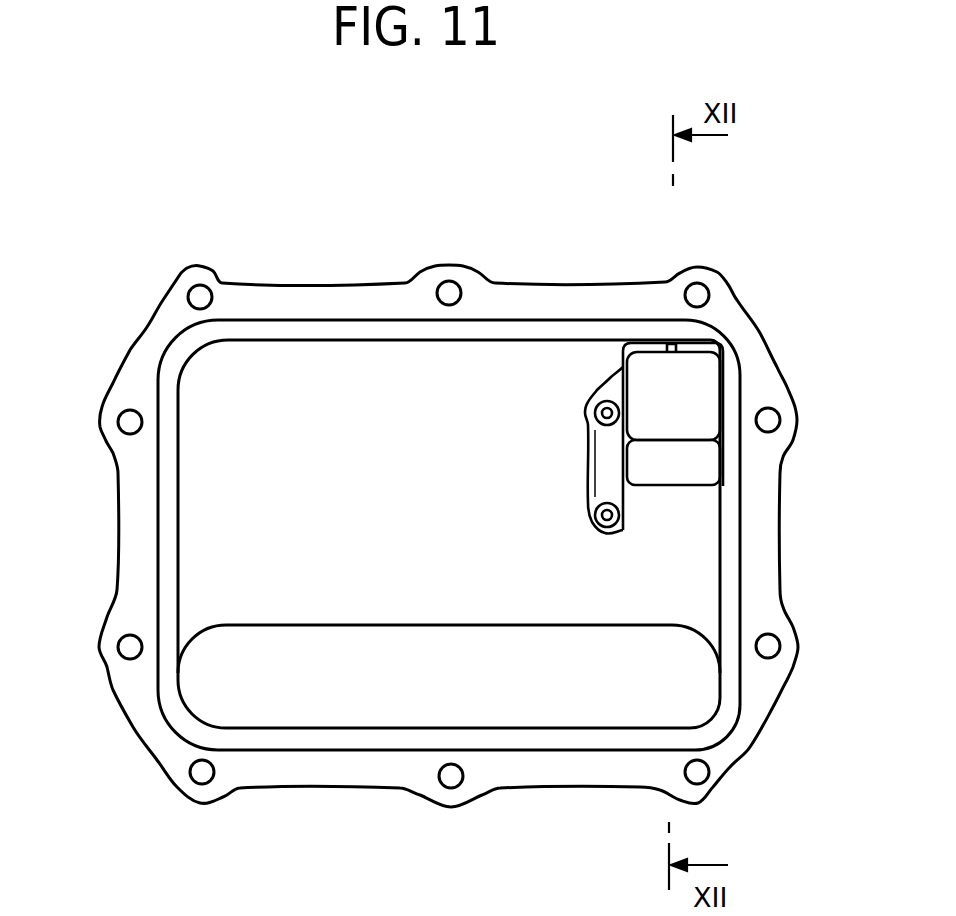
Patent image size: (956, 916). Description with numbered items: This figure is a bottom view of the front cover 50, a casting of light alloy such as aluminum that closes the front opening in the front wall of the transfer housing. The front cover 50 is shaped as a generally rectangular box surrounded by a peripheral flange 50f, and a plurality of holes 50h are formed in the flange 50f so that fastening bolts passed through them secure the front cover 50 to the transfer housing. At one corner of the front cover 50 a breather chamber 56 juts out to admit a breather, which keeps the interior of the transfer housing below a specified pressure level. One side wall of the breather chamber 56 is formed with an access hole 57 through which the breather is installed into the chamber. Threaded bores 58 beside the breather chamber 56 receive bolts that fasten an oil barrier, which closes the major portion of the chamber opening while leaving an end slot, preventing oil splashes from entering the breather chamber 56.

The front cover 50 is at (544, 280).
The peripheral flange 50f is at (356, 281).
The holes 50h is at (134, 423).
The breather chamber 56 is at (705, 388).
The access hole 57 is at (675, 343).
The threaded bores 58 is at (618, 413).